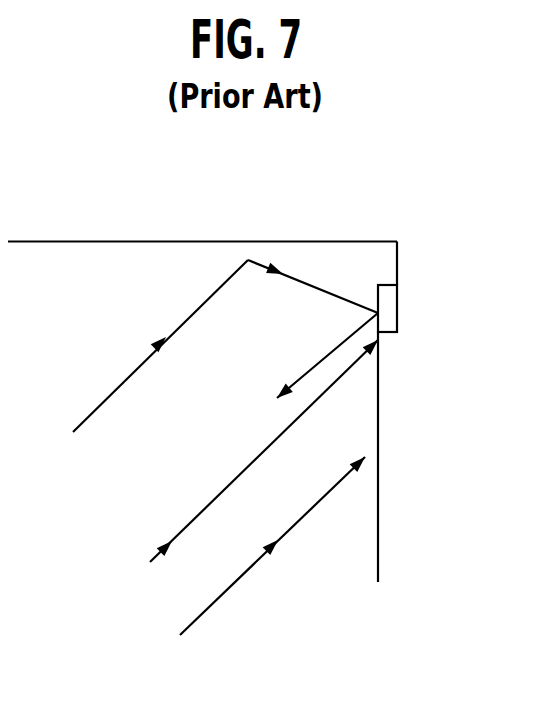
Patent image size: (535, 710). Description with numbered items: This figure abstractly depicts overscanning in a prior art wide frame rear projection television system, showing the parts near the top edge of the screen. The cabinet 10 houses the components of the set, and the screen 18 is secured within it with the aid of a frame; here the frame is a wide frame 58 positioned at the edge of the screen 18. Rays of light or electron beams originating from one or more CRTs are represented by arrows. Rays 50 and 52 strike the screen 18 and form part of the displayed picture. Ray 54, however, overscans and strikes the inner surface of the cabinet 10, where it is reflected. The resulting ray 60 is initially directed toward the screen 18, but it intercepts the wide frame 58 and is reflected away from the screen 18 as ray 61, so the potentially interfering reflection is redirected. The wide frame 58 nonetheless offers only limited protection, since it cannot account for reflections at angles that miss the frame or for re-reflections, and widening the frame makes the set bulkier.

The cabinet 10 is at (258, 241).
The screen 18 is at (378, 558).
The wide frame 58 is at (398, 304).
The ray 54 is at (142, 363).
The ray 60 is at (314, 287).
The reflected light ray 61 is at (351, 336).
The ray 52 is at (189, 524).
The ray 50 is at (249, 569).